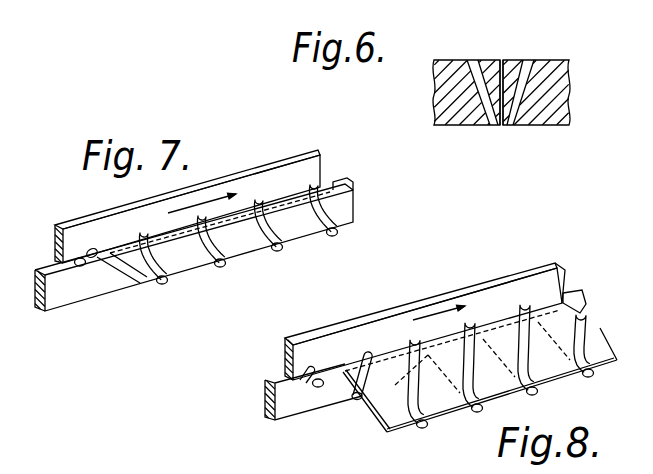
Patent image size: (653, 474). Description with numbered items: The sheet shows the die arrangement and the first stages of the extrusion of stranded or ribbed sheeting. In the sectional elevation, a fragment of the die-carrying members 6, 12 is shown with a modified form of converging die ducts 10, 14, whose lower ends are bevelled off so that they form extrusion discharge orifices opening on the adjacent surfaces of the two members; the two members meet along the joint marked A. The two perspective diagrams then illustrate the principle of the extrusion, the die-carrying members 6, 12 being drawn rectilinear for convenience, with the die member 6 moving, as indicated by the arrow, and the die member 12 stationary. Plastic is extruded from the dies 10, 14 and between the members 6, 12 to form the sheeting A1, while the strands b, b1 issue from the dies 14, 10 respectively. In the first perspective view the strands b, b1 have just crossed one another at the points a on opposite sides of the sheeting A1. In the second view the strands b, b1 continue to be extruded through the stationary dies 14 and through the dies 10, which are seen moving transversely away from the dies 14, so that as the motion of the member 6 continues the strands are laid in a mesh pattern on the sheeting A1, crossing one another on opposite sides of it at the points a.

In FIG. 6, the die-carrying member 6 is at (447, 108).
In FIG. 7, the die-carrying member 6 is at (297, 172).
In FIG. 8, the die-carrying member 6 is at (505, 292).
In FIG. 6, the die-carrying member 12 is at (553, 100).
In FIG. 7, the die-carrying member 12 is at (50, 297).
In FIG. 8, the die-carrying member 12 is at (283, 410).
In FIG. 6, the die duct 10 is at (492, 118).
In FIG. 7, the die duct 10 is at (89, 250).
In FIG. 8, the die duct 10 is at (308, 368).
In FIG. 6, the die duct 14 is at (517, 103).
In FIG. 7, the die duct 14 is at (84, 260).
In FIG. 8, the die duct 14 is at (318, 386).
In FIG. 6, the strands crossing region A is at (503, 127).
In FIG. 7, the strands crossing region A is at (70, 268).
In FIG. 8, the strands crossing region A is at (290, 378).
In FIG. 7, the sheeting A1 is at (230, 248).
In FIG. 8, the sheeting A1 is at (383, 410).
In FIG. 7, the crossing point a is at (217, 267).
In FIG. 8, the crossing point a is at (477, 411).
In FIG. 7, the strand b is at (300, 222).
In FIG. 8, the strand b is at (560, 383).
In FIG. 7, the strand b1 is at (332, 193).
In FIG. 8, the strand b1 is at (588, 327).